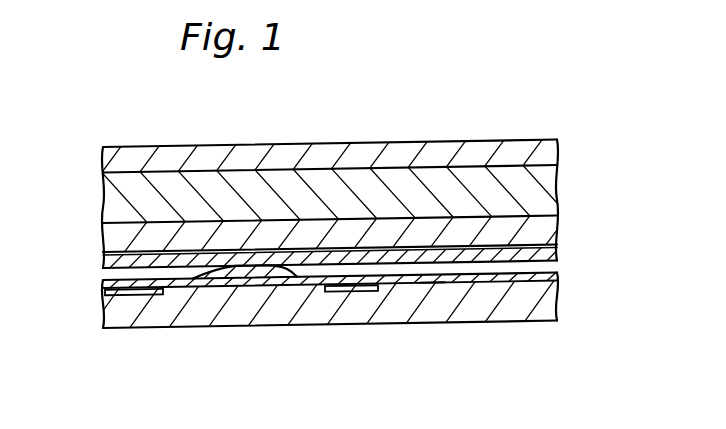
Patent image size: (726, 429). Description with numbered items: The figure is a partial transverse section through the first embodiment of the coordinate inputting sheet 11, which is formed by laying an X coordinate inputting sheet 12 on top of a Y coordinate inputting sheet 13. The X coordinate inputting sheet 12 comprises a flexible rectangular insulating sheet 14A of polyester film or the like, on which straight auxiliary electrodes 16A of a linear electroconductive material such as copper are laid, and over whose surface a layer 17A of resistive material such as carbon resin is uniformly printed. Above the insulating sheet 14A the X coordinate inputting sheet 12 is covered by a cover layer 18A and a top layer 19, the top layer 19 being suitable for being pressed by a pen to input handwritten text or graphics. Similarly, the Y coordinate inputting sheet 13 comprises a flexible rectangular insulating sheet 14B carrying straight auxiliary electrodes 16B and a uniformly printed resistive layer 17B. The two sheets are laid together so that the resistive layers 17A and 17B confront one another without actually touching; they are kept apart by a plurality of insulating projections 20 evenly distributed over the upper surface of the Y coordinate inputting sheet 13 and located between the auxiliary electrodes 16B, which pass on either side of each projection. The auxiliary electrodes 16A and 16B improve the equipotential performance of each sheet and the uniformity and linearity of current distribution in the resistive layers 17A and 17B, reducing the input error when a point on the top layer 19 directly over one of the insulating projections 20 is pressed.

The liquid crystal display device 11 is at (461, 118).
The X coordinate inputting sheet 12 is at (558, 150).
The Y coordinate inputting sheet 13 is at (558, 278).
The top layer 19 is at (102, 155).
The cover layer 18A is at (110, 200).
The flexible rectangular insulating sheet 14A is at (110, 240).
The resistive layer 17A is at (103, 262).
The resistive layer 17B is at (101, 290).
The flexible rectangular insulating sheet 14B is at (102, 318).
The auxiliary electrodes 16B is at (143, 297).
The auxiliary electrodes 16A is at (430, 293).
The insulating projections 20 is at (247, 281).